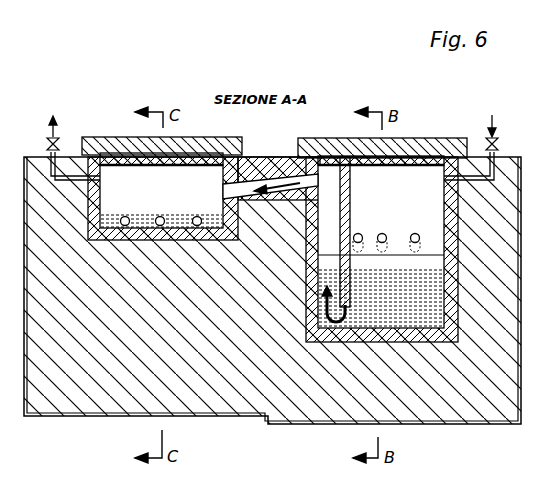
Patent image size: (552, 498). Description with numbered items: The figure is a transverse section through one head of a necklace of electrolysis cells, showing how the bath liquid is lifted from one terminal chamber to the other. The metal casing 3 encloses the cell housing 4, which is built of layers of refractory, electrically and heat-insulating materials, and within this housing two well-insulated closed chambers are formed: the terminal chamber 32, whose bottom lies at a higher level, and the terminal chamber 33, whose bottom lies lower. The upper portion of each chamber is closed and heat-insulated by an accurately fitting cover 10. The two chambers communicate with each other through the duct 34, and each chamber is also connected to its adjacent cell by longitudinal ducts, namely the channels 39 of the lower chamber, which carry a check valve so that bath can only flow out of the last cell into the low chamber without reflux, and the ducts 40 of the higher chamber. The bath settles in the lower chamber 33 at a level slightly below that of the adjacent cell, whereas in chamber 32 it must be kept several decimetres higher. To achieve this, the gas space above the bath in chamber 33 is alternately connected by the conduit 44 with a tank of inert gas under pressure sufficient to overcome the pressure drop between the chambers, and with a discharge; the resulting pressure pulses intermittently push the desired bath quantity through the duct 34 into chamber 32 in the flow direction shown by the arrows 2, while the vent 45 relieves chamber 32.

The double-line arrows 2 is at (280, 171).
The metal casing 3 is at (448, 412).
The cell housing 4 is at (110, 400).
The cover 10 is at (106, 138).
The terminal chamber 32 is at (197, 184).
The terminal chamber 33 is at (418, 178).
The duct 34 is at (298, 183).
The longitudinal ducts 39 is at (415, 233).
The longitudinal ducts 40 is at (197, 216).
The conduit 44 is at (493, 168).
The vent 45 is at (52, 158).